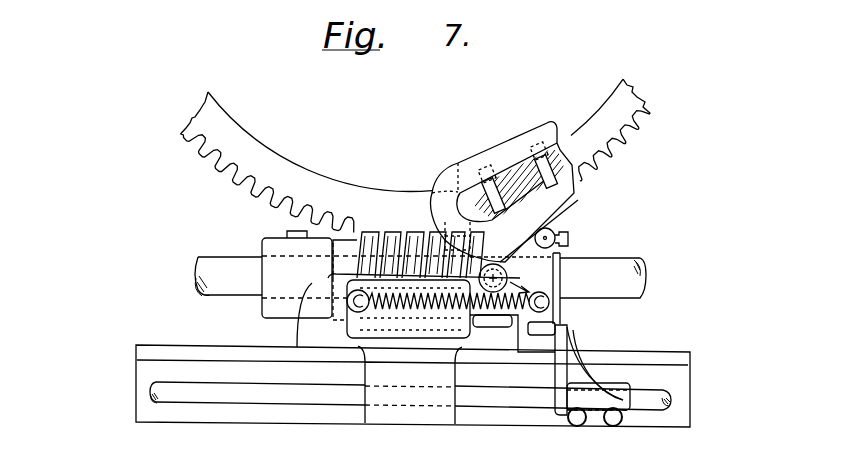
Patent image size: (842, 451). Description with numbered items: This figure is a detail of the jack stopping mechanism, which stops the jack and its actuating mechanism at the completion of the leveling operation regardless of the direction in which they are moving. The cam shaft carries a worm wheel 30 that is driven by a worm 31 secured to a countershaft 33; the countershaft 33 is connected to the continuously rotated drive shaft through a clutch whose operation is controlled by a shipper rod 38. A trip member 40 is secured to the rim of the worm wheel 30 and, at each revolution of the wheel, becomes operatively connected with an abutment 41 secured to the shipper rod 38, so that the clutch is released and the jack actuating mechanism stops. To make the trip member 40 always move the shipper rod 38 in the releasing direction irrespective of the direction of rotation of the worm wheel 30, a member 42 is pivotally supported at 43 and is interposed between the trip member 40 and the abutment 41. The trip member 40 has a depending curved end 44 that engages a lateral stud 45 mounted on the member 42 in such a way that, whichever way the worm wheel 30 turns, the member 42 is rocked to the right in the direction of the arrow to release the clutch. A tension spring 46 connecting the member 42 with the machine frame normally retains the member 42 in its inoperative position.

The worm wheel 30 is at (640, 106).
The worm 31 is at (389, 237).
The countershaft 33 is at (630, 277).
The shipper rod 38 is at (536, 400).
The trip member 40 is at (486, 156).
The abutment 41 is at (583, 372).
The member 42 is at (549, 292).
The pivot 43 is at (553, 237).
The depending curved end 44 is at (440, 219).
The lateral stud 45 is at (506, 285).
The tension spring 46 is at (443, 310).